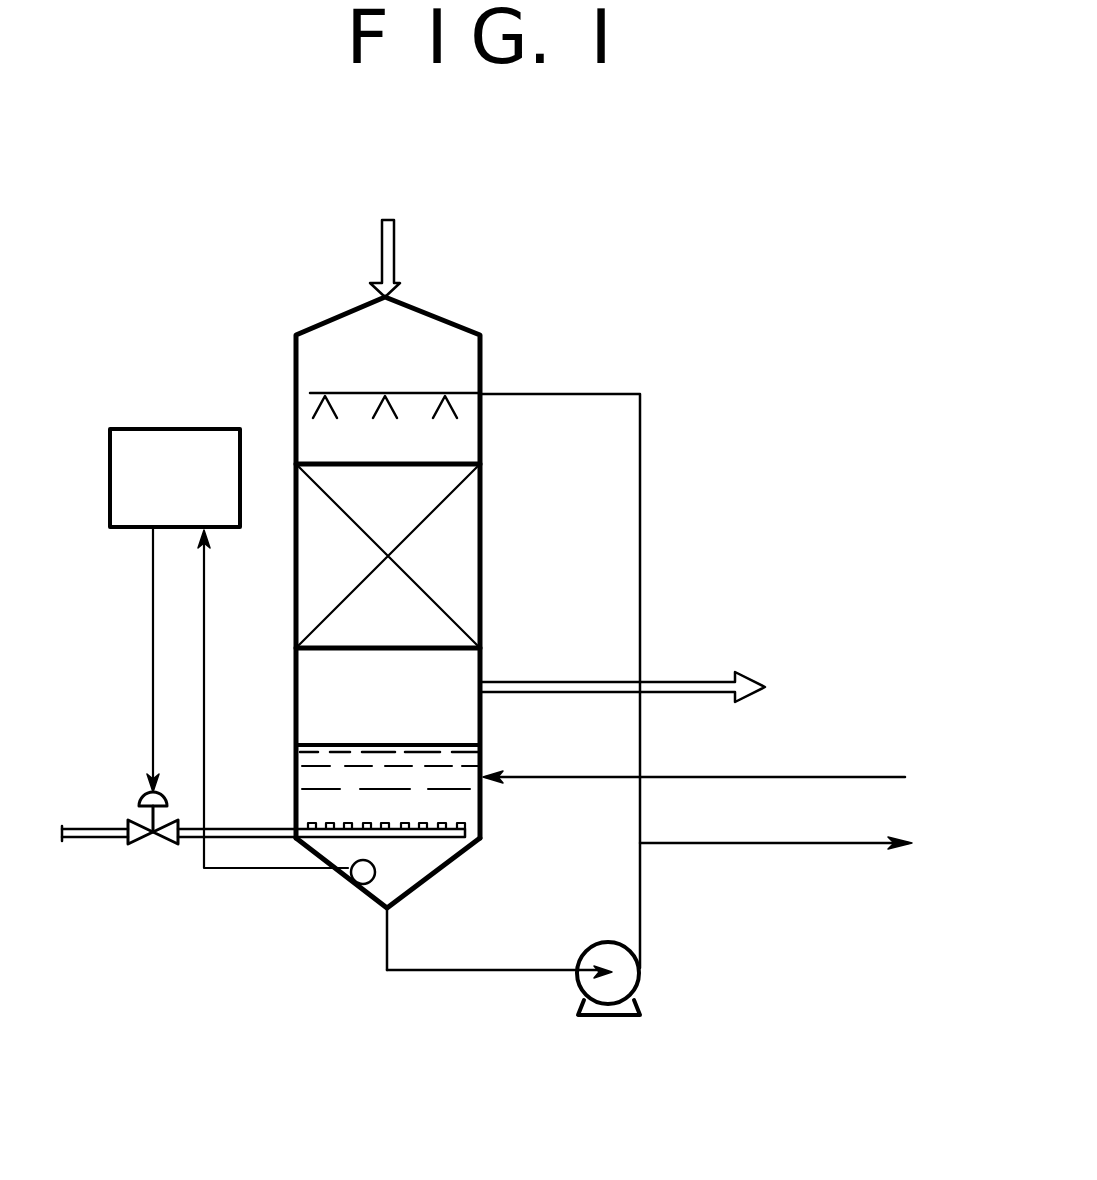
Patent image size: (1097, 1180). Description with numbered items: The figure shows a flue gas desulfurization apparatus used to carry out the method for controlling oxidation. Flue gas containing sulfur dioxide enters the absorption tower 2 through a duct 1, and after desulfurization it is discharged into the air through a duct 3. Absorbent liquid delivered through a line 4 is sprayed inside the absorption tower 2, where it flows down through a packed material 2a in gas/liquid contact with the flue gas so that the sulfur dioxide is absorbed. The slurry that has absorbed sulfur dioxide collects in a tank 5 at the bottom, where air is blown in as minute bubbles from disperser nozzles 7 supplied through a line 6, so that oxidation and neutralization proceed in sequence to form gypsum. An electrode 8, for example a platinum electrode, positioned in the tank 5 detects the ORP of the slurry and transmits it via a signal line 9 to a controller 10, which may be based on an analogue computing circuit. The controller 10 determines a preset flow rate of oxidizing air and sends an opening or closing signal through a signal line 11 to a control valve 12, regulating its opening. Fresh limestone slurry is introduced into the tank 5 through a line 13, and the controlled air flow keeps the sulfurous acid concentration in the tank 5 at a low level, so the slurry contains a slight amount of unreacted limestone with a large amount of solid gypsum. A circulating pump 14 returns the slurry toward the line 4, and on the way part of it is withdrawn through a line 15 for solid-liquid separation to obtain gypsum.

The duct 1 is at (393, 236).
The absorption tower 2 is at (482, 503).
The packed material 2a is at (462, 593).
The duct 3 is at (707, 680).
The line 4 is at (573, 393).
The tank 5 is at (470, 808).
The line 6 is at (236, 828).
The disperser nozzles 7 is at (427, 830).
The electrode 8 is at (355, 882).
The signal line 9 is at (245, 870).
The controller 10 is at (207, 428).
The signal line 11 is at (150, 648).
The control valve 12 is at (143, 845).
The line 13 is at (872, 777).
The circulating pump 14 is at (640, 988).
The line 15 is at (860, 845).